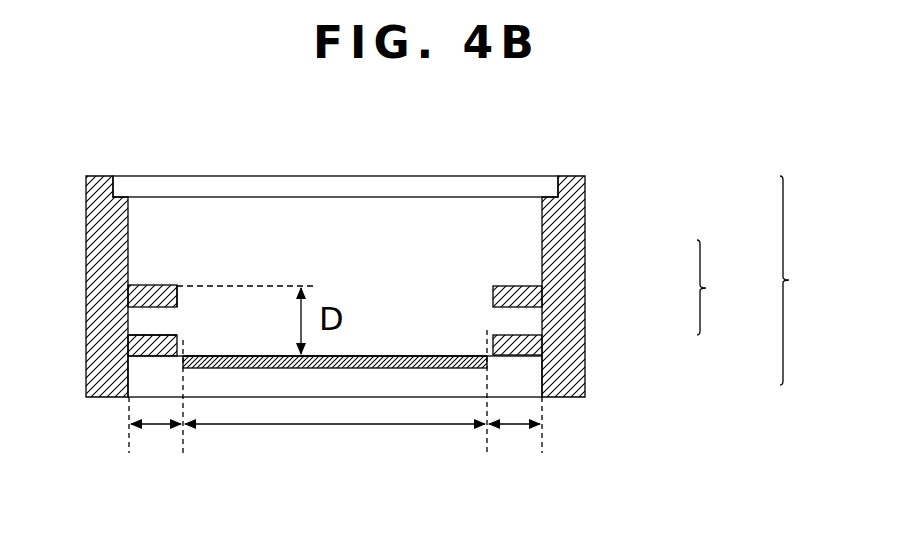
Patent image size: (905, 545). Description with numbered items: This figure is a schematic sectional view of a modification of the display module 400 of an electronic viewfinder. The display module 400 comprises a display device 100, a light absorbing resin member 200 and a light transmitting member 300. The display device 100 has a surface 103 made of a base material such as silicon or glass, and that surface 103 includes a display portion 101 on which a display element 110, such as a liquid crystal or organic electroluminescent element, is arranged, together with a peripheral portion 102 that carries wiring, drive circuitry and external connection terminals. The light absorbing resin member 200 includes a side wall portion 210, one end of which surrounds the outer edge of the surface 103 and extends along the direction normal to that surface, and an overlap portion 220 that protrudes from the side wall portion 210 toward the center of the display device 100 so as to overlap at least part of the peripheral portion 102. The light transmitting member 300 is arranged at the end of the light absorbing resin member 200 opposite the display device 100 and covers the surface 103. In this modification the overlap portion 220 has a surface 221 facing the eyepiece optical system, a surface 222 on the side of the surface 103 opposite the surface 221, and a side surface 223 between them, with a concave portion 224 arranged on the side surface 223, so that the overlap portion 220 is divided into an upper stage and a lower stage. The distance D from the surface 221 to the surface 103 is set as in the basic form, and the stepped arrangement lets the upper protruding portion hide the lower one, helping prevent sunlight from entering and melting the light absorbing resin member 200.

The display device 100 is at (530, 375).
The display portion 101 is at (333, 426).
The peripheral portion 102 is at (153, 427).
The surface 103 is at (386, 344).
The display element 110 is at (451, 354).
The light absorbing resin member 200 is at (735, 287).
The side wall portion 210 is at (569, 255).
The overlap portion 220 is at (530, 302).
The surface 221 is at (161, 276).
The surface 222 is at (150, 366).
The side surface 223 is at (184, 298).
The concave portion 224 is at (180, 323).
The light transmitting member 300 is at (560, 186).
The display module 400 is at (818, 280).